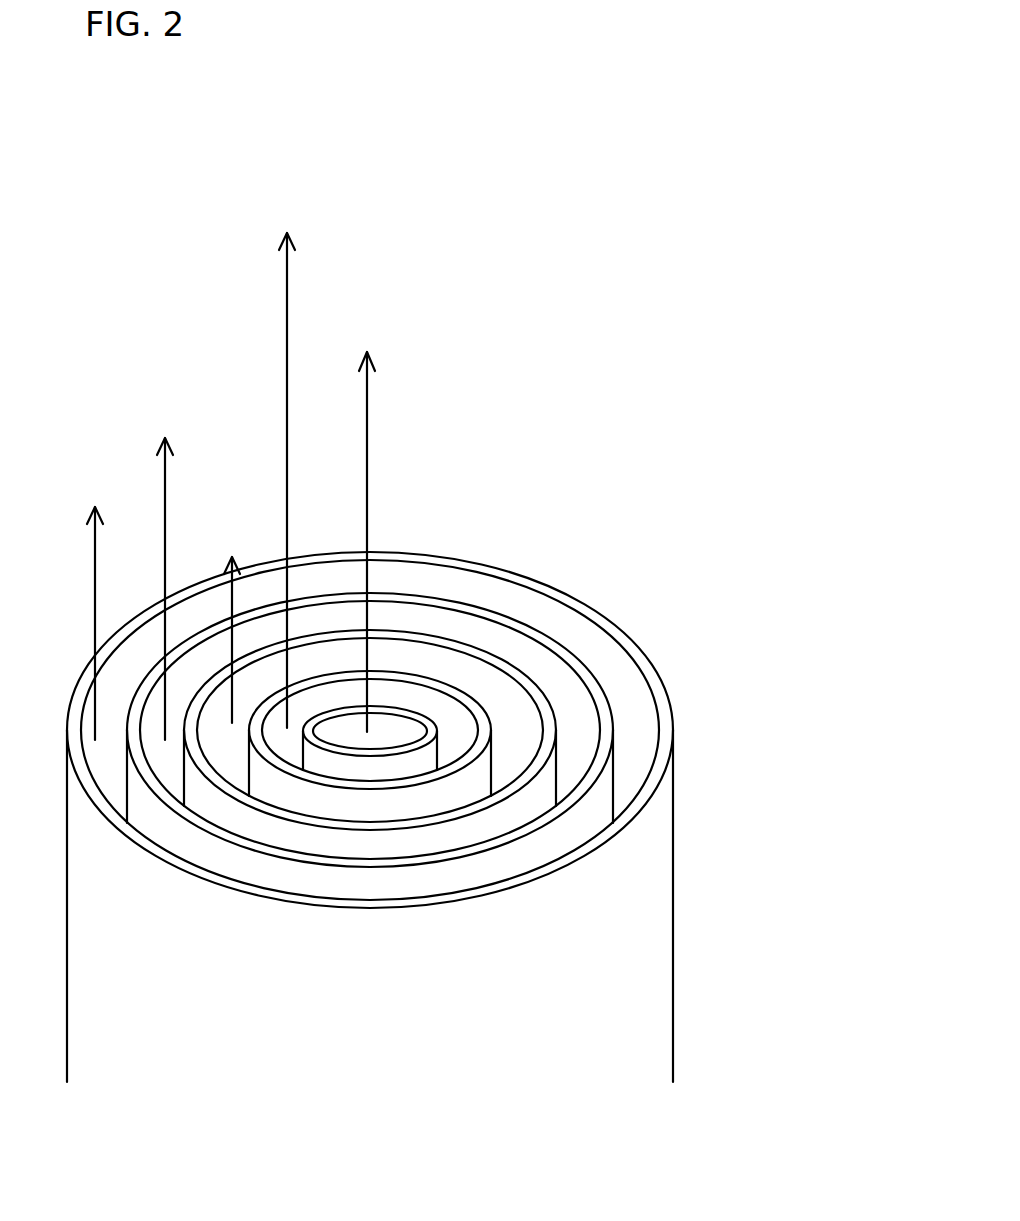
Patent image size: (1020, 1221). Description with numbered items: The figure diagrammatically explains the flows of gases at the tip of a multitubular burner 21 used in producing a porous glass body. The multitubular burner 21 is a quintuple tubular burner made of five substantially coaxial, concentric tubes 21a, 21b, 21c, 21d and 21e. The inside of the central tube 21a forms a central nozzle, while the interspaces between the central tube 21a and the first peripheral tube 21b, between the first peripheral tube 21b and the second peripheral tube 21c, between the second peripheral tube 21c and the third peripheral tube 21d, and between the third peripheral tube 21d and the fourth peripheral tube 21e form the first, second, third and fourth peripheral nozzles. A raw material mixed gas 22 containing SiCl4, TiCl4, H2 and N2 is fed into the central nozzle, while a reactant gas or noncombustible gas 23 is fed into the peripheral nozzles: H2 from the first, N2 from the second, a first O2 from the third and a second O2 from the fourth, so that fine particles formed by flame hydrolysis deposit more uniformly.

The multitubular burner 21 is at (568, 362).
The central tube 21a is at (437, 732).
The first peripheral tube 21b is at (491, 732).
The second peripheral tube 21c is at (556, 732).
The third peripheral tube 21d is at (613, 732).
The fourth peripheral tube 21e is at (673, 732).
The raw material mixed gas 22 is at (437, 208).
The reactant gas or noncombustible gas 23 is at (263, 183).